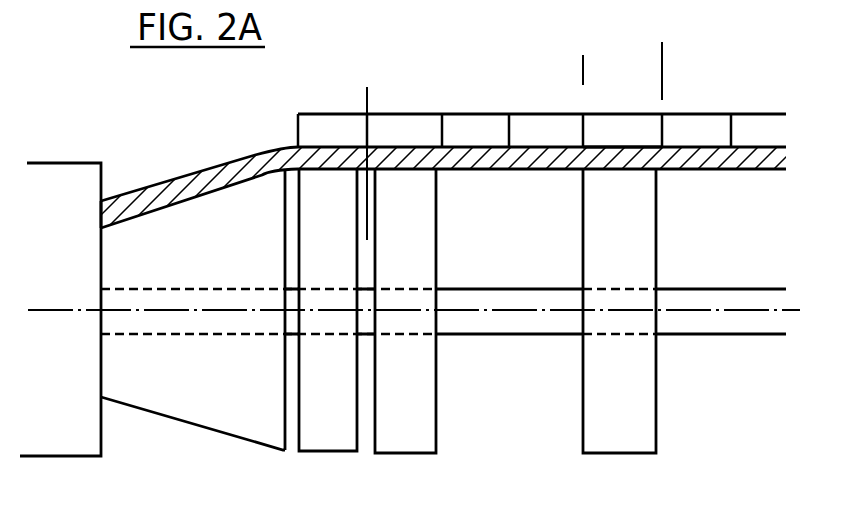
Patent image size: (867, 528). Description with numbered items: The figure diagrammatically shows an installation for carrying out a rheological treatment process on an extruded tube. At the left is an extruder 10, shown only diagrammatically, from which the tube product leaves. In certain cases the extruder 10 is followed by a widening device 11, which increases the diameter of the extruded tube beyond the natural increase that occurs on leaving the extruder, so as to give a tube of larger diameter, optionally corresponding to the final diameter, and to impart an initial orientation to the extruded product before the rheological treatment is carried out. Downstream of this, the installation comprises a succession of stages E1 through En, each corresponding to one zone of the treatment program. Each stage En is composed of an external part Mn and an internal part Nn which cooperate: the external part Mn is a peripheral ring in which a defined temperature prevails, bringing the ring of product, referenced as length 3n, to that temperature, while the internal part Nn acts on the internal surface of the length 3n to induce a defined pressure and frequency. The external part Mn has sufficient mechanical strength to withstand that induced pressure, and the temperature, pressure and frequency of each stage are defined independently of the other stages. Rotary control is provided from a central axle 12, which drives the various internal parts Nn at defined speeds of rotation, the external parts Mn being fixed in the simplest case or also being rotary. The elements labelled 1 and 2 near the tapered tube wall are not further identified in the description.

The junction between housing and tapered tube 1 is at (104, 201).
The tapered tube wall 2 is at (238, 158).
The length of the product 3n is at (607, 155).
The extruder 10 is at (78, 433).
The widening device 11 is at (201, 400).
The central axle 12 is at (524, 319).
The stage E1 is at (358, 150).
The stage En is at (645, 71).
The external part Mn is at (597, 123).
The internal part Nn is at (600, 246).